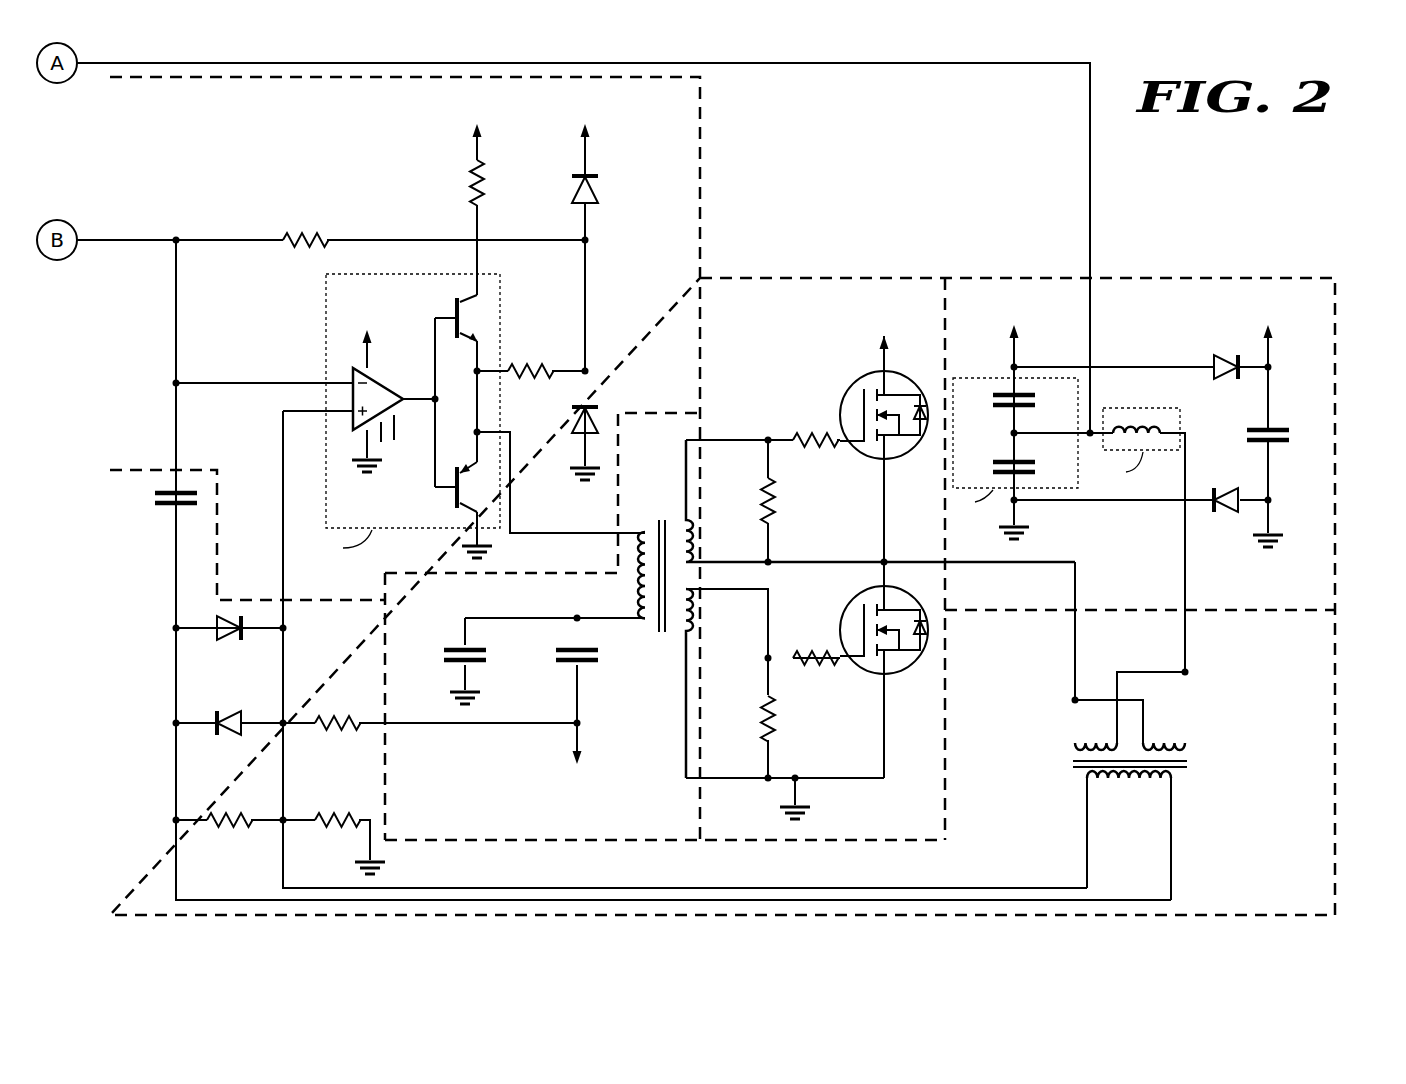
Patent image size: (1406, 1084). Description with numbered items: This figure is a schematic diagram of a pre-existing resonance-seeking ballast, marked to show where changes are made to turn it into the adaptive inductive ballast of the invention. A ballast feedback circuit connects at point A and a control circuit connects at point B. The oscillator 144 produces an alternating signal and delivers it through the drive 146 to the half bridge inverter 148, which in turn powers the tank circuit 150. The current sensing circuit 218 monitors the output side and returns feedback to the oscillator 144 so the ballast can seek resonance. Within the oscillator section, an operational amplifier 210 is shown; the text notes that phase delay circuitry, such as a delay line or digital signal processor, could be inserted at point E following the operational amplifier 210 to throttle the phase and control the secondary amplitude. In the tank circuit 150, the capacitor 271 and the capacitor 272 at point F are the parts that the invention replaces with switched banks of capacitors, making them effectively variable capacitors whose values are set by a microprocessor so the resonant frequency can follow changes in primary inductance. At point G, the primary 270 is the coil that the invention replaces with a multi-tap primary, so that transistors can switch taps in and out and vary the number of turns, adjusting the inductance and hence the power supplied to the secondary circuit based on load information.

The oscillator 144 is at (712, 127).
The drive 146 is at (653, 655).
The half bridge inverter 148 is at (852, 270).
The tank circuit 150 is at (1133, 270).
The operational amplifier 210 is at (352, 424).
The current sensing circuit 218 is at (104, 797).
The primary 270 is at (1136, 413).
The capacitor 271 is at (1002, 390).
The capacitor 272 is at (1002, 458).